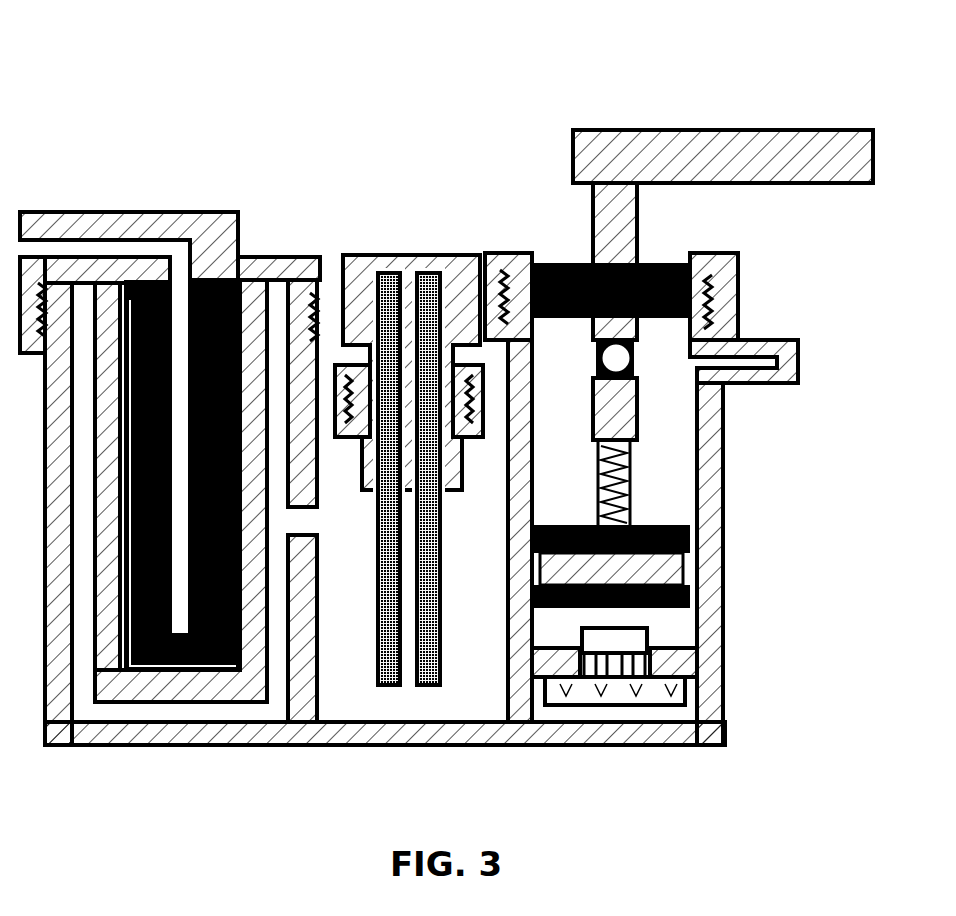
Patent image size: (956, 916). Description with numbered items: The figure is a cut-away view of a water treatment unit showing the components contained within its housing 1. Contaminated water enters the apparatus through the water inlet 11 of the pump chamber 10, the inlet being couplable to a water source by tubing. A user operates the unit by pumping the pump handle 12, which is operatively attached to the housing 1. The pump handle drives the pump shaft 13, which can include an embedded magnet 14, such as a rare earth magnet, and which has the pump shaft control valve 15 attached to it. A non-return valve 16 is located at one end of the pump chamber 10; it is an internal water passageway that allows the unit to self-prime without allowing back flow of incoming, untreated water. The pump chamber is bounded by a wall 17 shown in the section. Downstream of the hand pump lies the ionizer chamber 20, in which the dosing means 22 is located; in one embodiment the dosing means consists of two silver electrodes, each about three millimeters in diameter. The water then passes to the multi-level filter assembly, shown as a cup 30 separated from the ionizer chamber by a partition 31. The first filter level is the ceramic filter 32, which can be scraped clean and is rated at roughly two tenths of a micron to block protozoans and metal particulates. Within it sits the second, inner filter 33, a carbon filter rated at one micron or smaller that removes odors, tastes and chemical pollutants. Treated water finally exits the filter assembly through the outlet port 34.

The housing 1 is at (725, 728).
The pump chamber 10 is at (567, 337).
The water inlet 11 is at (775, 383).
The pump handle 12 is at (675, 130).
The pump shaft 13 is at (625, 208).
The embedded magnet 14 is at (637, 380).
The pump shaft control valve 15 is at (700, 537).
The non-return valve 16 is at (650, 647).
The chamber wall 17 is at (520, 705).
The ionizer chamber 20 is at (375, 465).
The dosing means 22 is at (428, 305).
The cup 30 is at (256, 712).
The partition wall 31 is at (305, 515).
The ceramic filter 32 is at (175, 702).
The inner filter 33 is at (127, 673).
The outlet port 34 is at (118, 250).